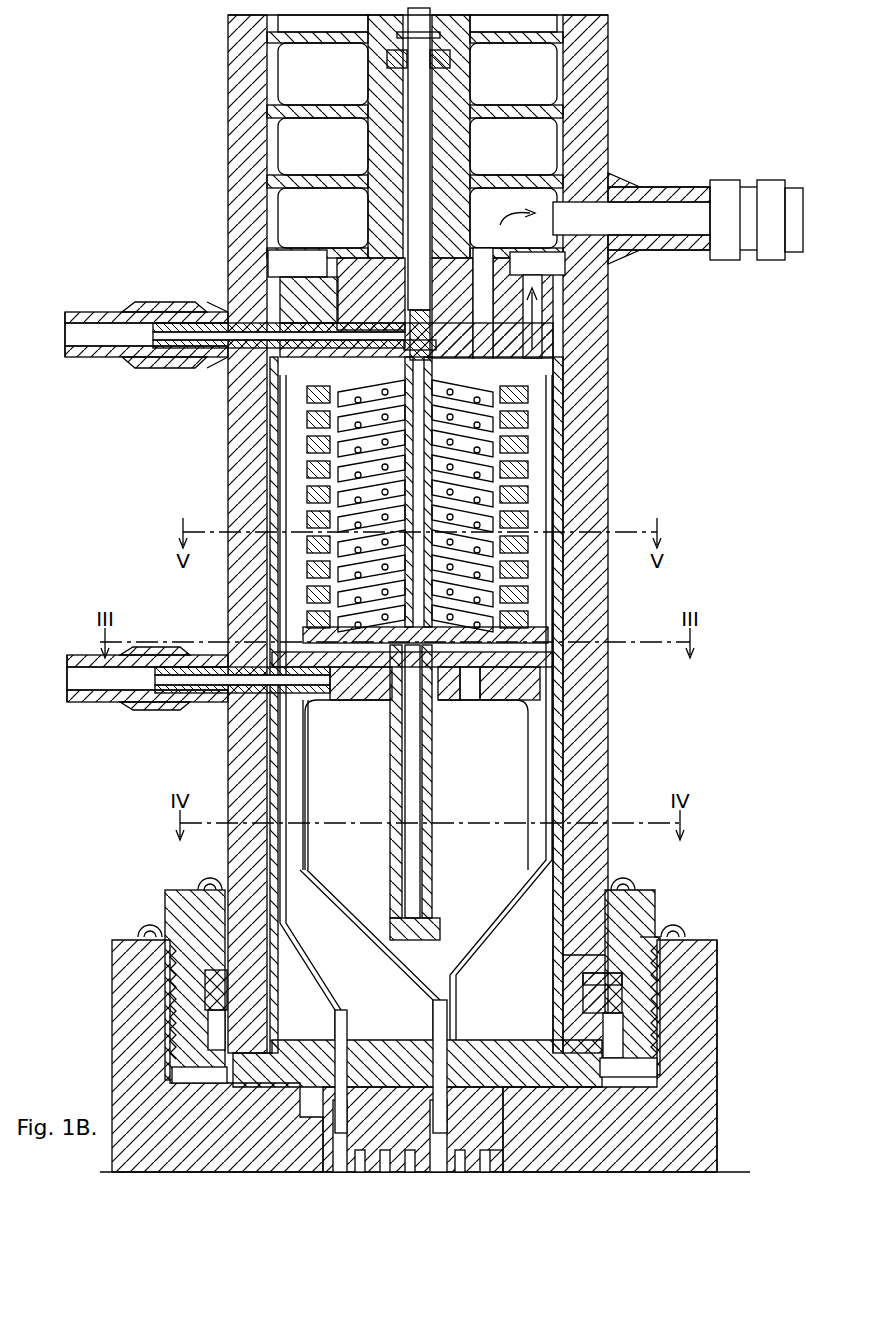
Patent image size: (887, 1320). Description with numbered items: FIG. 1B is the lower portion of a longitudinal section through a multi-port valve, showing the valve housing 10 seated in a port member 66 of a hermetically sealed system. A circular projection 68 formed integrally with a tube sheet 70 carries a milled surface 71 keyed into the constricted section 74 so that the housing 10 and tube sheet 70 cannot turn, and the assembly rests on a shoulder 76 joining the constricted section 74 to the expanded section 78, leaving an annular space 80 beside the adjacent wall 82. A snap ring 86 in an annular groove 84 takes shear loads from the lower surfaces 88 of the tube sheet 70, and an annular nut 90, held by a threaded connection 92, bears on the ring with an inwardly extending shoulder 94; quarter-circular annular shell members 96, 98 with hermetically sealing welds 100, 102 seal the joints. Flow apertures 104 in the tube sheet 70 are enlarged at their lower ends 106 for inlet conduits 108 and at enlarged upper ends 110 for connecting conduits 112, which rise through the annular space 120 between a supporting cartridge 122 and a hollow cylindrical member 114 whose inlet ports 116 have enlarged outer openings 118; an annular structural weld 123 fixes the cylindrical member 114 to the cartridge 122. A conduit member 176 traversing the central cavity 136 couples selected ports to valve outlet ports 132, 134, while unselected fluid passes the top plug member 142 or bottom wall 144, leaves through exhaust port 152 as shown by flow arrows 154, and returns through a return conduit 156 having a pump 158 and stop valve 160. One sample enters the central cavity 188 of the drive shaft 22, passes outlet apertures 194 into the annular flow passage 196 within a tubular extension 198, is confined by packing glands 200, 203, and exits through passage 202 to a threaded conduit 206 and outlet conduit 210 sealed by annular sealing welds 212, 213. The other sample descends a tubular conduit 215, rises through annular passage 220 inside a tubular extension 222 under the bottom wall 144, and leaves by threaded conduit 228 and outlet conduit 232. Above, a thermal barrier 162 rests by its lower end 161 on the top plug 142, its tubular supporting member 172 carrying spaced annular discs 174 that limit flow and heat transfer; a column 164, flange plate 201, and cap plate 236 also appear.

The valve housing 10 is at (608, 475).
The drive shaft 22 is at (415, 135).
The port member 66 is at (717, 1140).
The circular projection 68 is at (428, 1158).
The tube sheet 70 is at (477, 1042).
The milled surface 71 is at (390, 1158).
The constricted section 74 is at (493, 1172).
The shoulder 76 is at (205, 1085).
The expanded section 78 is at (717, 1000).
The annular space 80 is at (610, 1035).
The adjacent wall 82 is at (717, 960).
The annular groove 84 is at (590, 995).
The snap ring 86 is at (590, 980).
The lower surfaces 88 is at (482, 1160).
The annular nut 90 is at (640, 895).
The threaded connection 92 is at (660, 937).
The inwardly extending shoulder 94 is at (600, 955).
The annular shell member 96 is at (622, 878).
The annular shell member 98 is at (678, 926).
The hermetically sealing weld 100 is at (208, 876).
The hermetically sealing weld 102 is at (140, 925).
The flow apertures 104 is at (433, 1046).
The lower ends 106 is at (435, 1122).
The inlet conduits 108 is at (335, 1170).
The enlarged upper ends 110 is at (335, 1035).
The connecting conduits 112 is at (305, 620).
The cylindrical member 114 is at (560, 373).
The inlet ports 116 is at (505, 387).
The outer openings 118 is at (520, 410).
The annular space 120 is at (548, 455).
The supporting cartridge 122 is at (563, 428).
The annular structural weld 123 is at (565, 270).
The valve outlet port 132 is at (150, 365).
The valve outlet port 134 is at (130, 655).
The central cavity 136 is at (360, 700).
The top plug member 142 is at (335, 262).
The bottom wall 144 is at (455, 700).
The exhaust port 152 is at (613, 180).
The flow arrows 154 is at (490, 215).
The return conduit 156 is at (650, 192).
The pump 158 is at (768, 180).
The stop valve 160 is at (716, 180).
The lower end 161 is at (368, 240).
The thermal barrier 162 is at (478, 88).
The column 164 is at (370, 215).
The tubular supporting member 172 is at (380, 72).
The annular discs 174 is at (316, 100).
The conduit member 176 is at (498, 700).
The central cavity 188 is at (433, 370).
The outlet apertures 194 is at (405, 282).
The annular flow passage 196 is at (432, 145).
The tubular extension 198 is at (452, 80).
The packing gland 200 is at (388, 55).
The flange plate 201 is at (395, 367).
The passage 202 is at (408, 322).
The packing gland 203 is at (433, 340).
The threaded conduit 206 is at (230, 380).
The outlet conduit 210 is at (92, 312).
The annular sealing weld 212 is at (190, 302).
The annular sealing weld 213 is at (205, 358).
The tubular conduit 215 is at (405, 803).
The annular passage 220 is at (432, 752).
The tubular extension 222 is at (390, 750).
The threaded conduit 228 is at (200, 706).
The outlet conduit 232 is at (85, 702).
The cap plate 236 is at (470, 50).